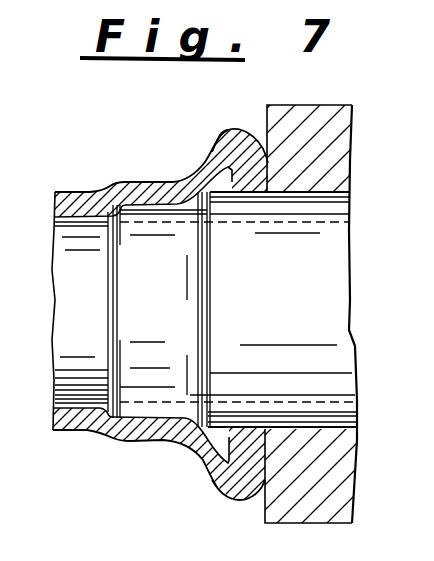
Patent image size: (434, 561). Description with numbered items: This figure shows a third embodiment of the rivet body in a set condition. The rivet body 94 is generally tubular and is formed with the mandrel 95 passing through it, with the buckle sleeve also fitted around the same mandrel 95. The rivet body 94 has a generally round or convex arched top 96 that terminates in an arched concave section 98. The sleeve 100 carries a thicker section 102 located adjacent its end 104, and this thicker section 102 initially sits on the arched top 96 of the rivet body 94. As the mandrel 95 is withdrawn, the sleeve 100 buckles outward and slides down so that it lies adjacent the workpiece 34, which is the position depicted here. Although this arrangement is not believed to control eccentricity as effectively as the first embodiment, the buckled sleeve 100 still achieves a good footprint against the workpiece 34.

The workpiece 34 is at (323, 120).
The rivet body 94 is at (335, 364).
The mandrel 95 is at (68, 264).
The arched top 96 is at (118, 202).
The arched concave section 98 is at (148, 440).
The sleeve 100 is at (166, 198).
The thicker section 102 is at (233, 488).
The end 104 is at (244, 172).